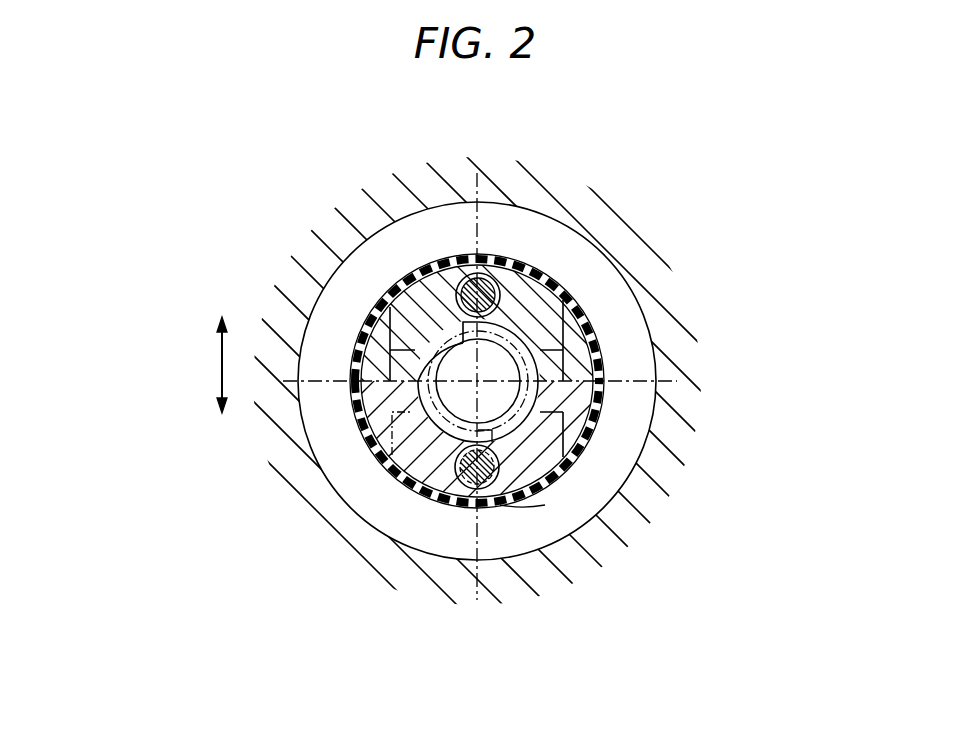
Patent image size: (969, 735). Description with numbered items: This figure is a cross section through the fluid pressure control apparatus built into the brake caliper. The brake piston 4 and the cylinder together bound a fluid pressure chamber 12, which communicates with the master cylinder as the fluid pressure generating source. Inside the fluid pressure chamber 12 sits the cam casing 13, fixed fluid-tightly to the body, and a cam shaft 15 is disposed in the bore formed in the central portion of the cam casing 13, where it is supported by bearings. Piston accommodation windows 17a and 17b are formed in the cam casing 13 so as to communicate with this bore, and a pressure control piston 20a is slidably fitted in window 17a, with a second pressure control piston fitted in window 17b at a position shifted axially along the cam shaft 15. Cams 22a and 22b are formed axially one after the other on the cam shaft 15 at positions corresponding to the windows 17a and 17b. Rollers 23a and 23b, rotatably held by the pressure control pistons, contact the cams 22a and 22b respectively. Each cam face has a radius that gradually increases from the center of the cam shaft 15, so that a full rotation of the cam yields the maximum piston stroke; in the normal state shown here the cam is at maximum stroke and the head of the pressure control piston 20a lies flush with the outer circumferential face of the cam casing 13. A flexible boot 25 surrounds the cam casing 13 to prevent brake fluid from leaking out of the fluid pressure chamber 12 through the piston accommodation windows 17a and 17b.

The brake piston 4 is at (425, 198).
The fluid pressure chamber 12 is at (350, 293).
The cam casing 13 is at (415, 392).
The cam shaft 15 is at (413, 410).
The piston accommodation window 17a is at (565, 318).
The piston accommodation window 17b is at (563, 443).
The pressure control piston 20a is at (545, 290).
The cam 22a is at (602, 373).
The cam 22b is at (602, 400).
The roller 23a is at (498, 298).
The roller 23b is at (466, 472).
The flexible boot 25 is at (522, 495).